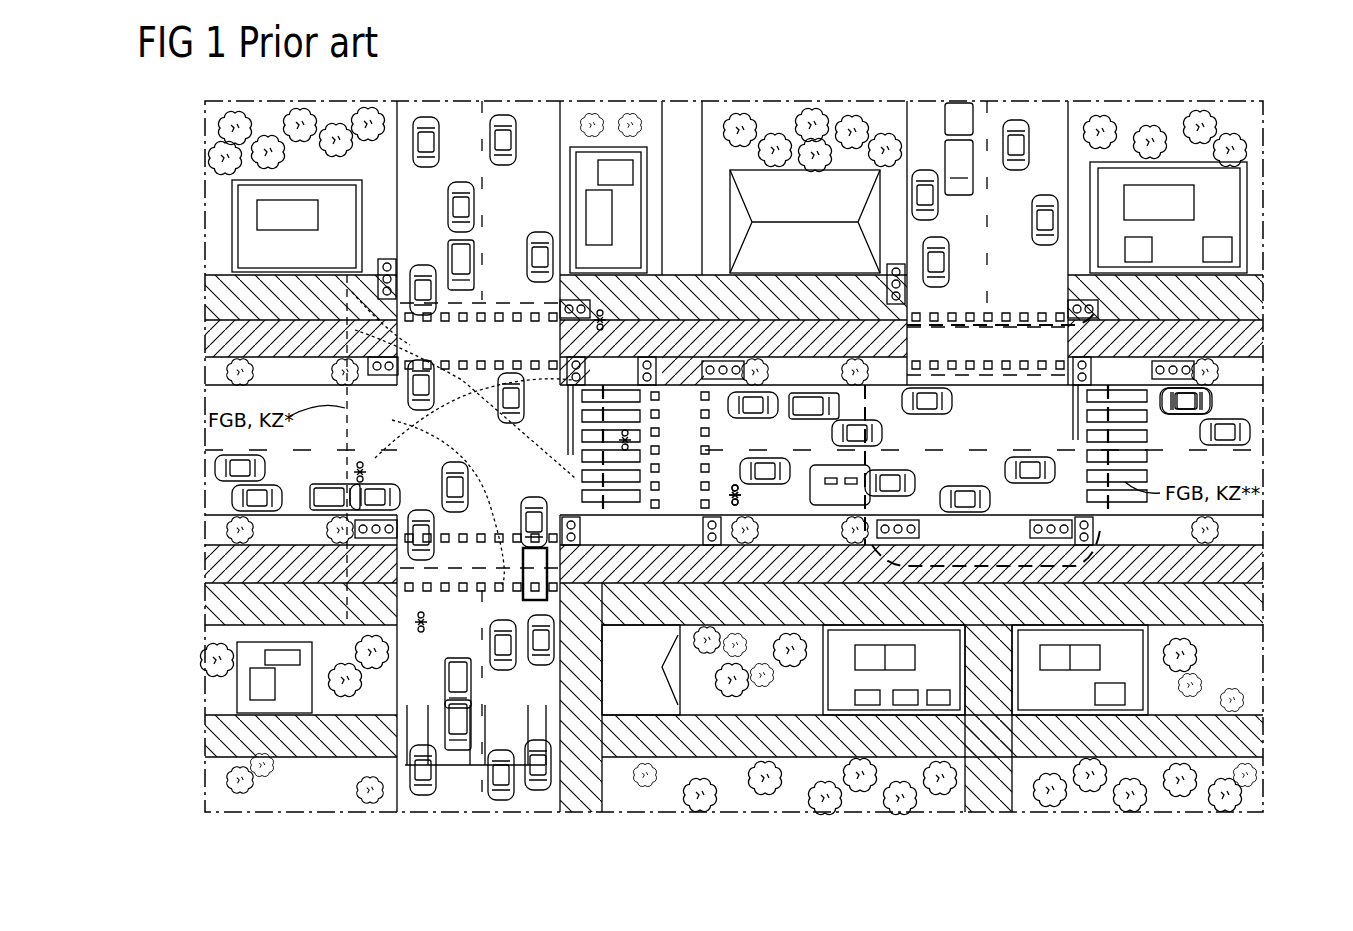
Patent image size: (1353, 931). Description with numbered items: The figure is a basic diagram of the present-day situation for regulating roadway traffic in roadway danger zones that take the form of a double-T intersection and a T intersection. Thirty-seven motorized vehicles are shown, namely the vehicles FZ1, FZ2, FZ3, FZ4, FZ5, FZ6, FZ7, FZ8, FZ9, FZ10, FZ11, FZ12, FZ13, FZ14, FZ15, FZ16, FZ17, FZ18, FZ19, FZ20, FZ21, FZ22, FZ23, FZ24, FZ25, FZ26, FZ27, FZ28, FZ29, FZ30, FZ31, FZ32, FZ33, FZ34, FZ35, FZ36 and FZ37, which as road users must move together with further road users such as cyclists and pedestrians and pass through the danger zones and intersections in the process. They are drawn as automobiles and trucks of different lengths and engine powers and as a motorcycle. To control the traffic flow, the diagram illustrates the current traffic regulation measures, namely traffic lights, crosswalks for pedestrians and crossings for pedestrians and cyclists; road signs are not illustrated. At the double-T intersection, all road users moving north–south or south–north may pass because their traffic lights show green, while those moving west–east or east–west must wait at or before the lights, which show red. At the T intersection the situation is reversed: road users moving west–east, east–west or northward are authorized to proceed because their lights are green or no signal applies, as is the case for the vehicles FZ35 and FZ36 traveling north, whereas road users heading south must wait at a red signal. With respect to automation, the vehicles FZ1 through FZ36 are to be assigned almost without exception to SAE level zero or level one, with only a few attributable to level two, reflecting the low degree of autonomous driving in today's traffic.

The motorized vehicle FZ1 is at (430, 117).
The motorized vehicle FZ2 is at (423, 265).
The motorized vehicle FZ3 is at (385, 400).
The motorized vehicle FZ4 is at (421, 510).
The motorized vehicle FZ5 is at (412, 620).
The motorized vehicle FZ6 is at (423, 745).
The motorized vehicle FZ7 is at (460, 182).
The motorized vehicle FZ8 is at (470, 245).
The motorized vehicle FZ9 is at (468, 488).
The motorized vehicle FZ10 is at (455, 658).
The motorized vehicle FZ11 is at (500, 800).
The motorized vehicle FZ12 is at (503, 670).
The motorized vehicle FZ13 is at (512, 373).
The motorized vehicle FZ14 is at (506, 115).
The motorized vehicle FZ15 is at (538, 790).
The motorized vehicle FZ16 is at (578, 655).
The motorized vehicle FZ17 is at (535, 497).
The motorized vehicle FZ18 is at (540, 232).
The motorized vehicle FZ19 is at (215, 467).
The motorized vehicle FZ20 is at (362, 466).
The motorized vehicle FZ21 is at (770, 485).
The motorized vehicle FZ22 is at (1030, 457).
The motorized vehicle FZ23 is at (232, 497).
The motorized vehicle FZ24 is at (330, 484).
The motorized vehicle FZ25 is at (735, 505).
The motorized vehicle FZ26 is at (832, 505).
The motorized vehicle FZ27 is at (968, 486).
The motorized vehicle FZ28 is at (1250, 432).
The motorized vehicle FZ29 is at (855, 420).
The motorized vehicle FZ30 is at (1212, 400).
The motorized vehicle FZ31 is at (952, 400).
The motorized vehicle FZ32 is at (768, 392).
The motorized vehicle FZ33 is at (912, 195).
The motorized vehicle FZ34 is at (950, 262).
The motorized vehicle FZ35 is at (945, 115).
The motorized vehicle FZ36 is at (1016, 120).
The motorized vehicle FZ37 is at (1032, 225).